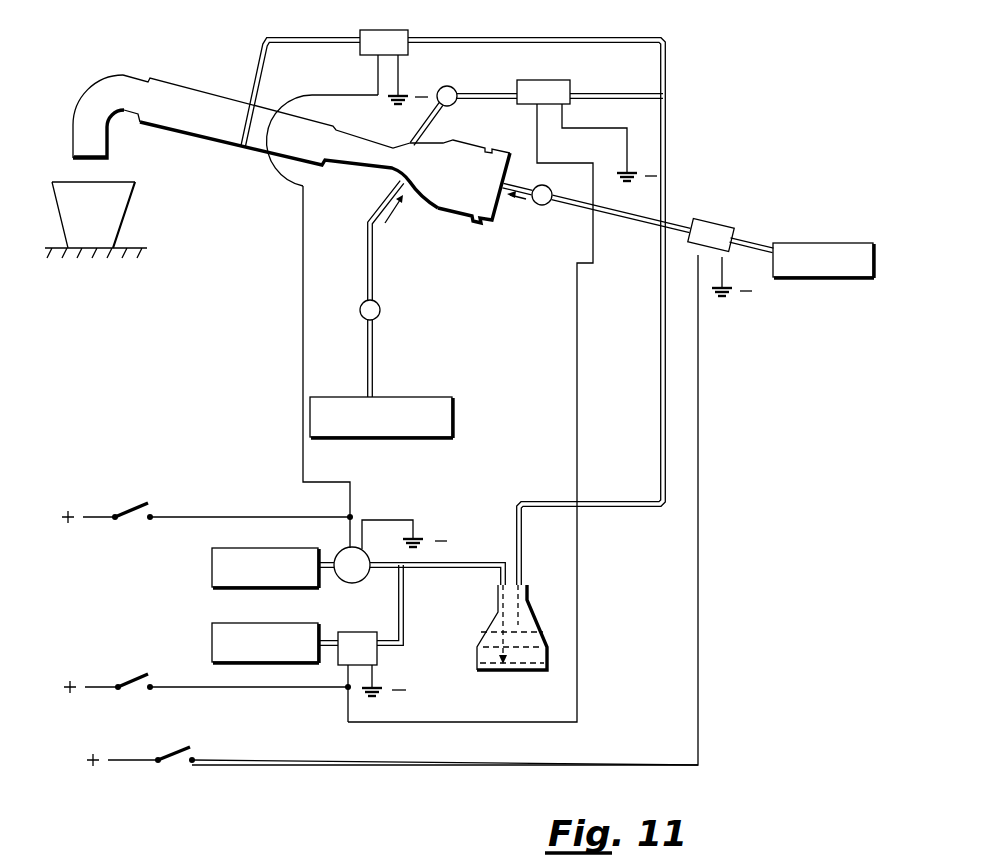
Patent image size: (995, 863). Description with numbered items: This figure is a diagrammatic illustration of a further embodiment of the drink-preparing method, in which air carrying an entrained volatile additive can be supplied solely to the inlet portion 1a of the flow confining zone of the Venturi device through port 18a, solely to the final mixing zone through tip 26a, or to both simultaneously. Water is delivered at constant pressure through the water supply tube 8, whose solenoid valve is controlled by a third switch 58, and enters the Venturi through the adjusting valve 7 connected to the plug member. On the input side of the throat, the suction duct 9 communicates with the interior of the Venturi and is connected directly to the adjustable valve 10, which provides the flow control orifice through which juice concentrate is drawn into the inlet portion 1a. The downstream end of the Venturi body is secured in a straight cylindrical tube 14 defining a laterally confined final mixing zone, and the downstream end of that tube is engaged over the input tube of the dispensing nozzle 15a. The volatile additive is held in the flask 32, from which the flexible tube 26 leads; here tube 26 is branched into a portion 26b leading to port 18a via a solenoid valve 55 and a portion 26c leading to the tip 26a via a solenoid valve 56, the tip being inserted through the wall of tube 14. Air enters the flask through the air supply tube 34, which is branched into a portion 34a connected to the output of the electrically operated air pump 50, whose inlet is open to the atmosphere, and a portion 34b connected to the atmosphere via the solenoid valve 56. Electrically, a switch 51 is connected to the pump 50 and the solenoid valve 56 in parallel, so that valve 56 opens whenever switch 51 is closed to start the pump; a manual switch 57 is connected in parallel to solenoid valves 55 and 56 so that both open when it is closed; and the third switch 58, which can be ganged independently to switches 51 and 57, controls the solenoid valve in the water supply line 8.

The inlet portion 1a is at (422, 182).
The adjusting valve 7 is at (543, 207).
The water supply tube 8 is at (677, 224).
The suction duct 9 is at (377, 277).
The adjustable valve 10 is at (380, 304).
The cylindrical tube 14 is at (166, 78).
The dispensing nozzle 15a is at (103, 152).
The port 18a is at (413, 144).
The flexible tube 26 is at (658, 414).
The tip portion 26a is at (242, 127).
The tube portion 26b is at (483, 89).
The tube portion 26c is at (493, 38).
The flask 32 is at (485, 623).
The air supply tube 34 is at (457, 561).
The tube portion 34a is at (383, 560).
The tube portion 34b is at (403, 611).
The air pump 50 is at (362, 583).
The switch 51 is at (138, 491).
The solenoid valve 55 is at (560, 79).
The solenoid valve 56 is at (391, 31).
The manual switch 57 is at (136, 675).
The third switch 58 is at (178, 752).